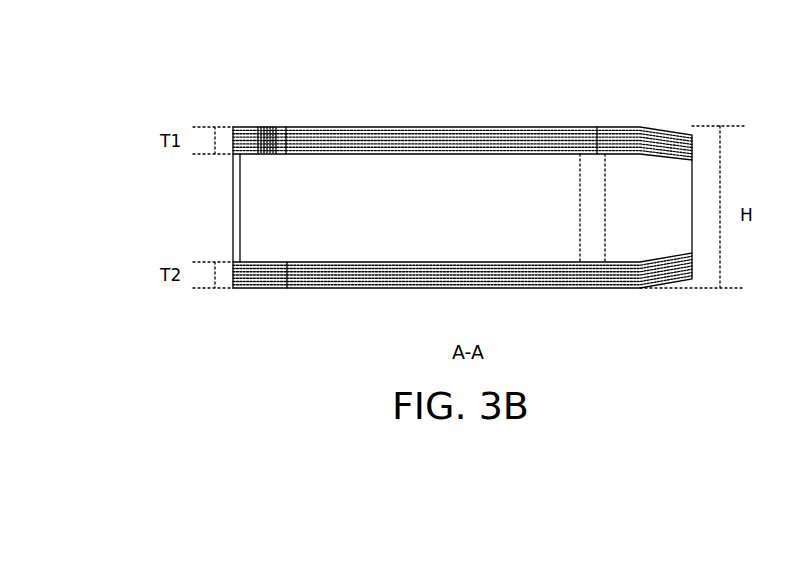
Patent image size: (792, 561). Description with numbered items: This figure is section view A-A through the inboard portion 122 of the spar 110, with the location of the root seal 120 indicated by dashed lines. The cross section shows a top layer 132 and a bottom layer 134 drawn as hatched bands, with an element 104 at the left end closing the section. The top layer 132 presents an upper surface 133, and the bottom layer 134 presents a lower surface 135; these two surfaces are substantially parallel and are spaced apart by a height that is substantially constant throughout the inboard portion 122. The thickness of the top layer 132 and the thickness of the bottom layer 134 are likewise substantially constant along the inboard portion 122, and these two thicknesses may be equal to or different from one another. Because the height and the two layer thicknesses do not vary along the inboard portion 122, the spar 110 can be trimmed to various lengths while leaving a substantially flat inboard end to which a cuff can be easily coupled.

The side wall 104 is at (233, 127).
The spar 110 is at (583, 57).
The root seal 120 is at (597, 127).
The inboard portion 122 is at (472, 57).
The top layer 132 is at (279, 128).
The upper surface 133 is at (362, 128).
The bottom layer 134 is at (307, 288).
The lower surface 135 is at (415, 288).